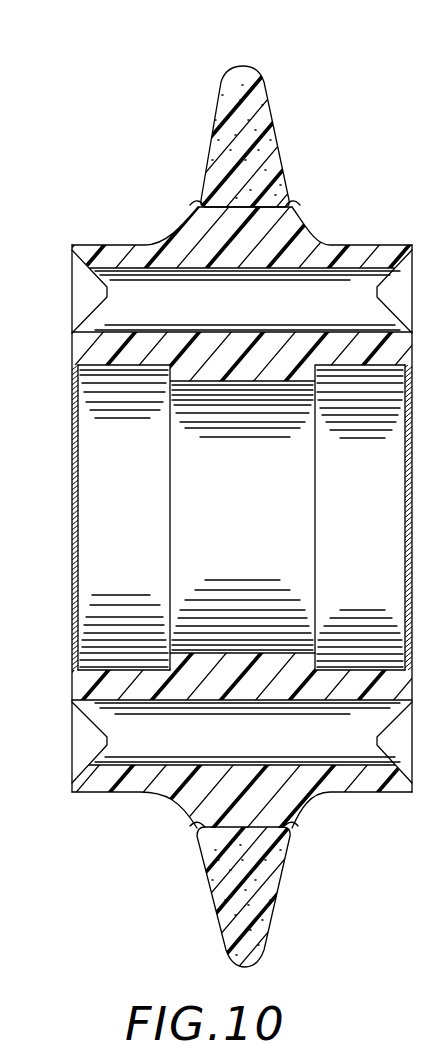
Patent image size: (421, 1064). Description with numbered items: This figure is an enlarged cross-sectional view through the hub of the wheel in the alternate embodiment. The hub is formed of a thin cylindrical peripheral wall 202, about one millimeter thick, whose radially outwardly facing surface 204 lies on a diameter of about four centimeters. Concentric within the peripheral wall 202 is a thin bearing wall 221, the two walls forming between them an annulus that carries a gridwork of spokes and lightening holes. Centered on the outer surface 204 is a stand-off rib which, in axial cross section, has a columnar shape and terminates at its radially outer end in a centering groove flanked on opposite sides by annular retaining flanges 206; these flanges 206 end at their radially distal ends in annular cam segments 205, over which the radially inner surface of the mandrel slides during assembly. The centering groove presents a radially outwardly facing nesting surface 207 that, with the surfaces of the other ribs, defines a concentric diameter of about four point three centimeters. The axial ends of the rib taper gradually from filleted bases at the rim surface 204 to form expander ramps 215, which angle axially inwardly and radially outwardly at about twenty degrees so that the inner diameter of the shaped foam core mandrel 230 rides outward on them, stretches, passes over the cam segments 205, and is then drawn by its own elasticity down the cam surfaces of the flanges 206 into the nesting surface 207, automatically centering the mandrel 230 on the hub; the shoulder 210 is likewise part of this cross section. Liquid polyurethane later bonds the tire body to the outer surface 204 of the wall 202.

The cylindrical peripheral wall 202 is at (72, 789).
The radially outwardly facing surface 204 is at (82, 224).
The annular cam segment 205 is at (195, 838).
The annular retaining flange 206 is at (197, 199).
The nesting surface 207 is at (192, 826).
The upper shoulder 210 is at (188, 229).
The expander ramp 215 is at (170, 802).
The bearing wall 221 is at (72, 350).
The shaped foam core mandrel 230 is at (259, 78).